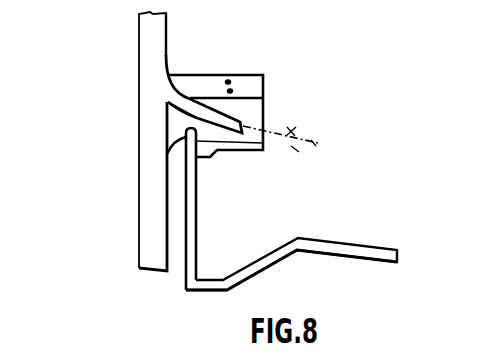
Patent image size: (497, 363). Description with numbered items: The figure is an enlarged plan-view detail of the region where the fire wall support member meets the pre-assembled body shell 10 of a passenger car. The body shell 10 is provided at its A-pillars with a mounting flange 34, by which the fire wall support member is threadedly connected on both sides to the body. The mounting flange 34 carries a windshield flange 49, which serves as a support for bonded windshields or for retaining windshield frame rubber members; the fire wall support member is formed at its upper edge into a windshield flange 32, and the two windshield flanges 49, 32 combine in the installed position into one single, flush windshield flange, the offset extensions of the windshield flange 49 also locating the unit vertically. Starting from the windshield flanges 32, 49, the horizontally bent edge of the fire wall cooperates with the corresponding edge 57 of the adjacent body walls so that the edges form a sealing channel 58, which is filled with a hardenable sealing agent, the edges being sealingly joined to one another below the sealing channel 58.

The body shell 10 is at (124, 114).
The mounting flange 34 is at (208, 88).
The windshield flange of the fire wall support member 32 is at (296, 128).
The windshield flange 49 is at (182, 119).
The cooperating edge of adjacent body walls 57 is at (186, 212).
The sealing channel 58 is at (331, 244).